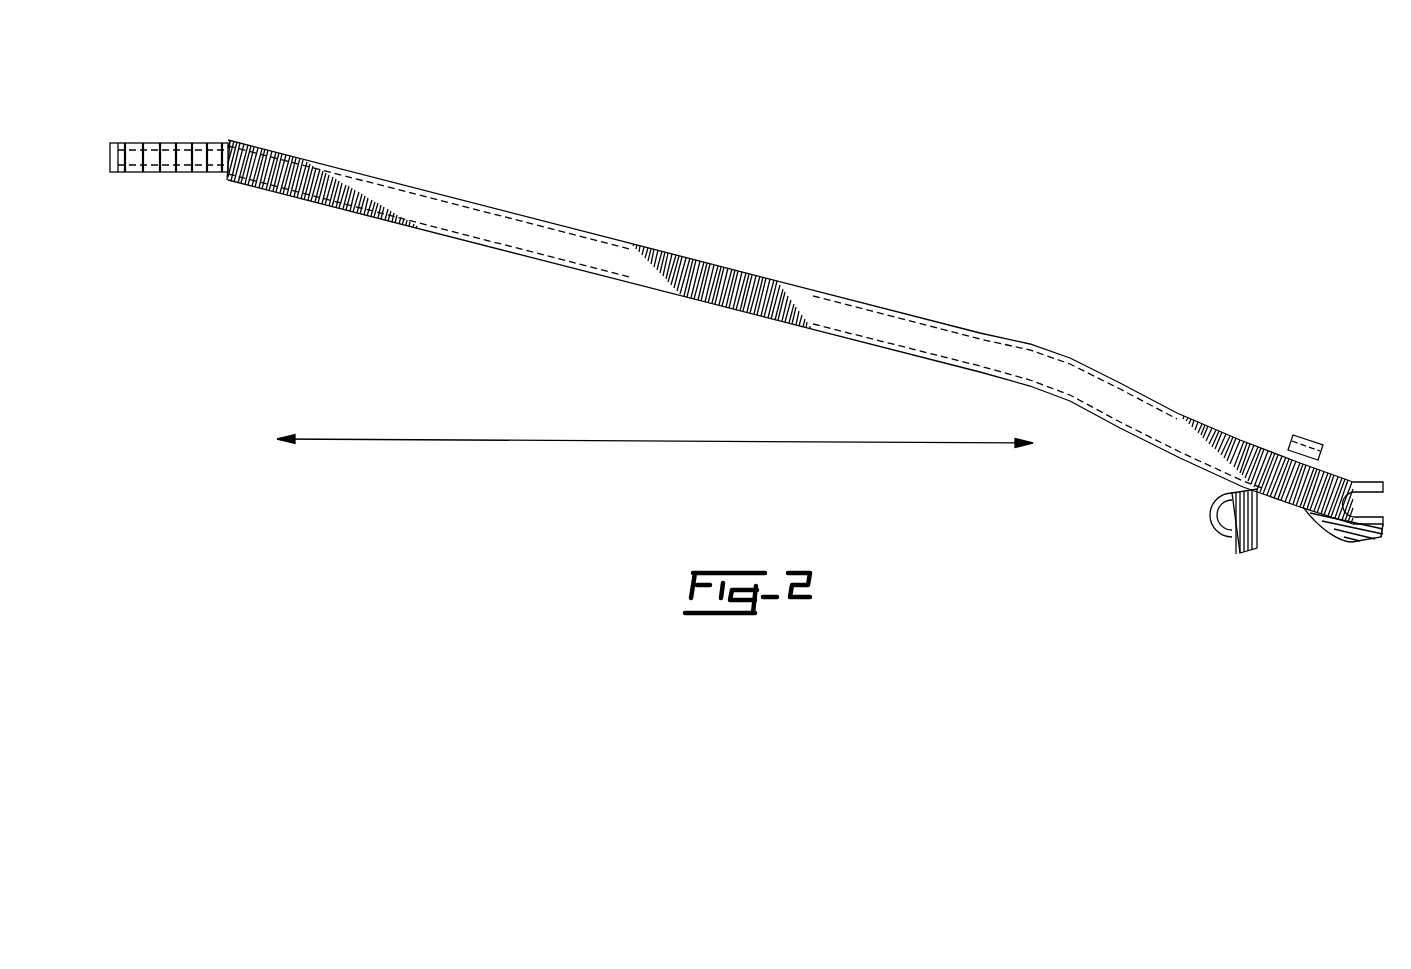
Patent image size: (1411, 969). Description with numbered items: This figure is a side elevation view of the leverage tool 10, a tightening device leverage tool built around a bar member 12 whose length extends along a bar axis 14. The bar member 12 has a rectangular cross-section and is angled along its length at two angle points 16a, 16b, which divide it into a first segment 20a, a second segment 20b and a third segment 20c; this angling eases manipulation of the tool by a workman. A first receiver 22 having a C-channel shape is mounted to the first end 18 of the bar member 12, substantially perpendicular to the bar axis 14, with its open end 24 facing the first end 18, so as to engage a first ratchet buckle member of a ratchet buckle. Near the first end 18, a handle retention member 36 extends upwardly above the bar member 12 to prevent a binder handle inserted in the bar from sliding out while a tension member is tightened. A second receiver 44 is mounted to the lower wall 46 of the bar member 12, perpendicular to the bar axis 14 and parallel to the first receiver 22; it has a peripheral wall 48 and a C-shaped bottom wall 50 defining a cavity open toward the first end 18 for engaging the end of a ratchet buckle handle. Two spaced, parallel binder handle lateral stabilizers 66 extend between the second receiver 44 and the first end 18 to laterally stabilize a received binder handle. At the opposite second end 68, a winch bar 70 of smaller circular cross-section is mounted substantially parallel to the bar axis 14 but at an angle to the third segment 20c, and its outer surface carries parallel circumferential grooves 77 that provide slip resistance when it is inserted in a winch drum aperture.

The leverage tool 10 is at (905, 195).
The bar member 12 is at (717, 266).
The bar axis 14 is at (588, 442).
The angle point 16a is at (1240, 492).
The angle point 16b is at (1063, 355).
The first end 18 is at (1358, 480).
The first segment 20a is at (1277, 470).
The second segment 20b is at (1160, 423).
The third segment 20c is at (500, 228).
The first receiver 22 is at (1378, 482).
The open end 24 is at (1378, 506).
The handle retention member 36 is at (1308, 432).
The second receiver 44 is at (1245, 553).
The lower wall 46 is at (1098, 418).
The peripheral wall 48 is at (1252, 507).
The C-shaped bottom wall 50 is at (1213, 527).
The binder handle lateral stabilizers 66 is at (1352, 542).
The second end 68 is at (237, 140).
The winch bar 70 is at (150, 142).
The circumferential grooves 77 is at (160, 228).